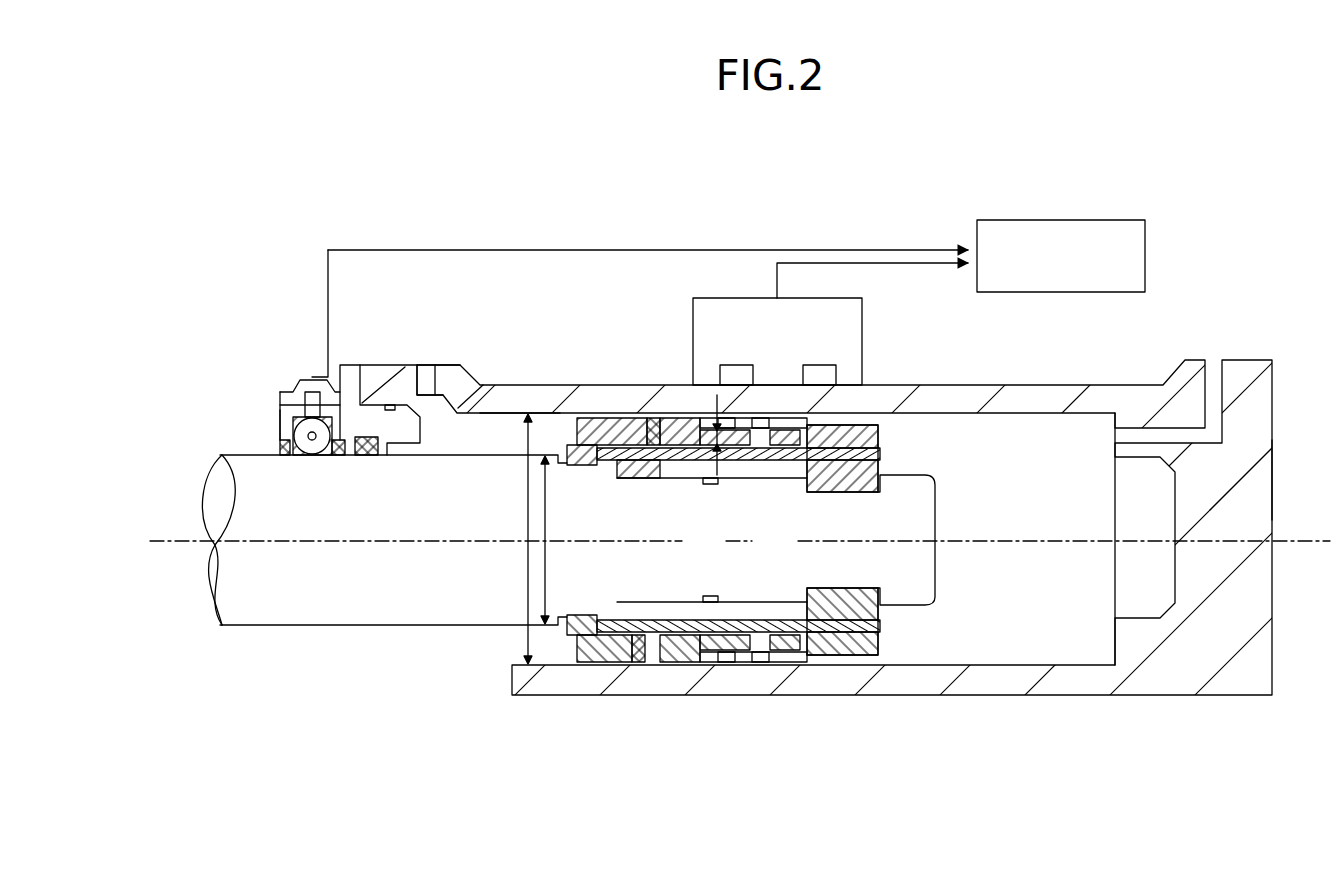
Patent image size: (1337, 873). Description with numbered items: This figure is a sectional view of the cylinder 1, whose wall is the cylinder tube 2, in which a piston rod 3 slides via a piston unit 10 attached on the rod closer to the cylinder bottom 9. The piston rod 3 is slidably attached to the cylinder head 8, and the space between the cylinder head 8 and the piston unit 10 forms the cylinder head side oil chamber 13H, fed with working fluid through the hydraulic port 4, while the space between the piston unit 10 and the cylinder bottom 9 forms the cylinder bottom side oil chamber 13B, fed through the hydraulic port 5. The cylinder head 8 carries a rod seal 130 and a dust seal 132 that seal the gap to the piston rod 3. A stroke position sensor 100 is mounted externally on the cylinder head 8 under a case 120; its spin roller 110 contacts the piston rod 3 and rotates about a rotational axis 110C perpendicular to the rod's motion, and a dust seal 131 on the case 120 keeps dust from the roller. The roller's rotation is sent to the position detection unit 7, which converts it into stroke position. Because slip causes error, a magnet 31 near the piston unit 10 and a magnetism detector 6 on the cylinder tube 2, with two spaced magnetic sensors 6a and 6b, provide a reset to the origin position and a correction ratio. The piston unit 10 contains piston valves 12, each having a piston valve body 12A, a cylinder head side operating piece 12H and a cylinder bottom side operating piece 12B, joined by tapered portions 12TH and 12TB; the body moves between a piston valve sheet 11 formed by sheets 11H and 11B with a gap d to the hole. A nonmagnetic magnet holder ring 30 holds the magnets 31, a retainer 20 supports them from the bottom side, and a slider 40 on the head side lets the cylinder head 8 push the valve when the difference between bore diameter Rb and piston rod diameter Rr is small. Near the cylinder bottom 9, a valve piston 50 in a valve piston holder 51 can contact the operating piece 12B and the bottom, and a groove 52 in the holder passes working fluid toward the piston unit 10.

The cylinder 1 is at (1200, 188).
The cylinder tube 2 is at (1045, 385).
The piston rod 3 is at (235, 628).
The hydraulic port 4 is at (440, 380).
The hydraulic port 5 is at (1215, 360).
The magnetism detector 6 is at (737, 298).
The magnetic sensor 6a is at (733, 378).
The magnetic sensor 6b is at (830, 375).
The position detection unit 7 is at (1070, 220).
The cylinder head 8 is at (407, 420).
The cylinder bottom 9 is at (1258, 476).
The piston unit 10 is at (670, 697).
The piston valve sheet 11 is at (683, 522).
The piston valve sheet 11H is at (698, 622).
The piston valve sheet 11B is at (785, 622).
The piston valve 12 is at (878, 728).
The piston valve body 12A is at (640, 640).
The cylinder bottom side operating piece 12B is at (800, 660).
The cylinder head side operating piece 12H is at (632, 640).
The tapered portion 12TH is at (715, 660).
The tapered portion 12TB is at (760, 655).
The cylinder head side oil chamber 13H is at (490, 433).
The cylinder bottom side oil chamber 13B is at (1065, 630).
The retainer 20 is at (655, 420).
The magnet holder ring 30 is at (608, 655).
The magnet 31 is at (608, 468).
The slider 40 is at (565, 630).
The valve piston 50 is at (880, 600).
The valve piston holder 51 is at (882, 632).
The groove 52 is at (848, 428).
The stroke position sensor 100 is at (312, 370).
The spin roller 110 is at (300, 382).
The rotational axis 110C is at (282, 425).
The case 120 is at (285, 392).
The rod seal 130 is at (368, 400).
The dust seal 131 is at (310, 436).
The dust seal 132 is at (337, 458).
The gap d is at (716, 428).
The bore diameter Rb is at (528, 577).
The piston rod diameter Rr is at (548, 577).